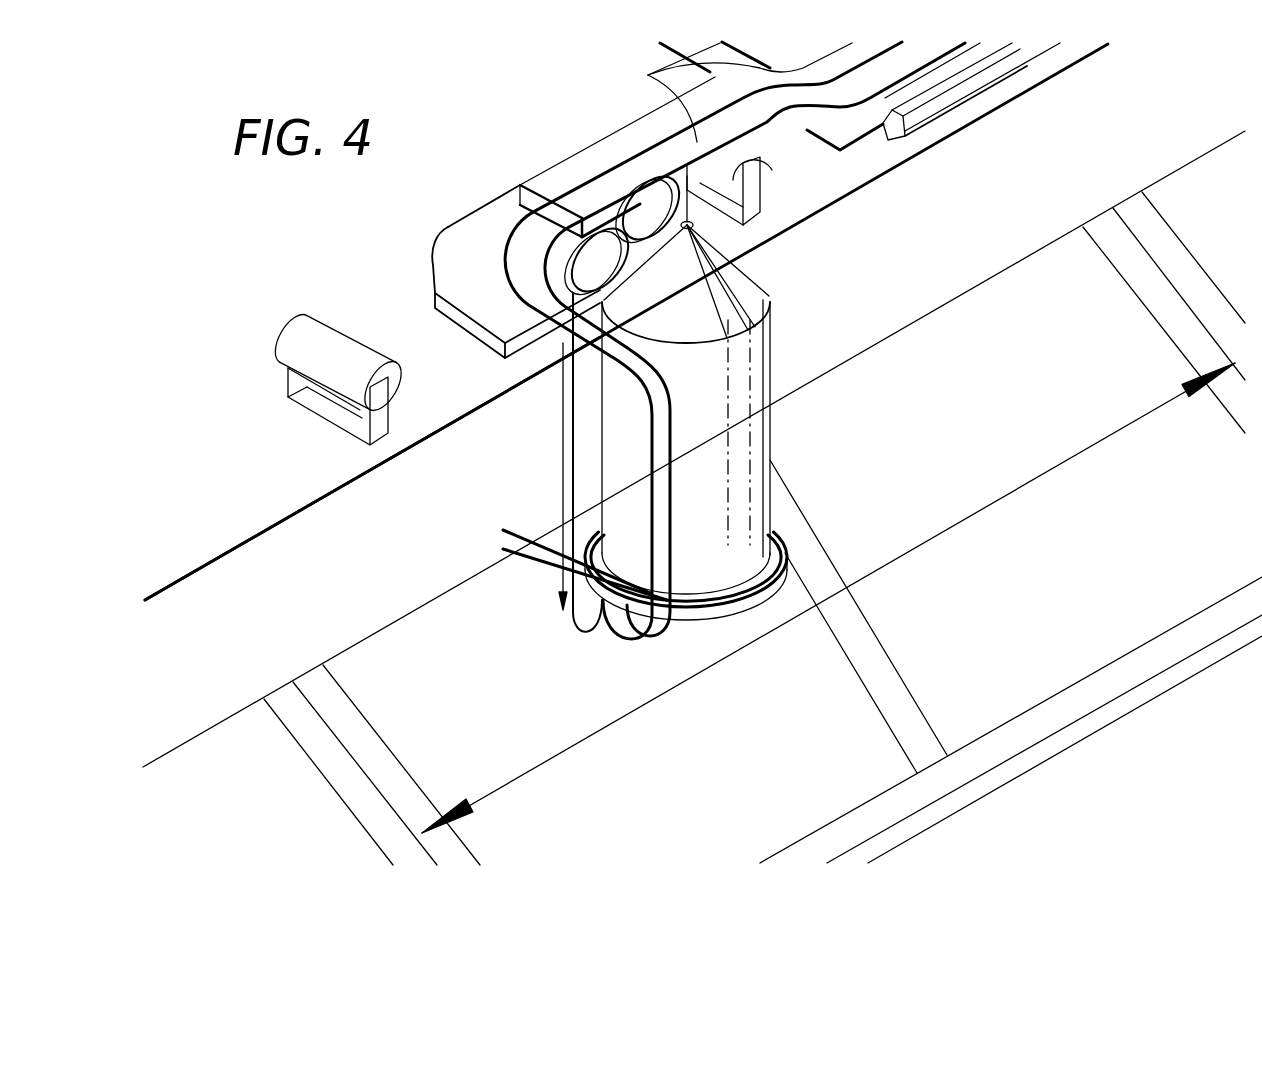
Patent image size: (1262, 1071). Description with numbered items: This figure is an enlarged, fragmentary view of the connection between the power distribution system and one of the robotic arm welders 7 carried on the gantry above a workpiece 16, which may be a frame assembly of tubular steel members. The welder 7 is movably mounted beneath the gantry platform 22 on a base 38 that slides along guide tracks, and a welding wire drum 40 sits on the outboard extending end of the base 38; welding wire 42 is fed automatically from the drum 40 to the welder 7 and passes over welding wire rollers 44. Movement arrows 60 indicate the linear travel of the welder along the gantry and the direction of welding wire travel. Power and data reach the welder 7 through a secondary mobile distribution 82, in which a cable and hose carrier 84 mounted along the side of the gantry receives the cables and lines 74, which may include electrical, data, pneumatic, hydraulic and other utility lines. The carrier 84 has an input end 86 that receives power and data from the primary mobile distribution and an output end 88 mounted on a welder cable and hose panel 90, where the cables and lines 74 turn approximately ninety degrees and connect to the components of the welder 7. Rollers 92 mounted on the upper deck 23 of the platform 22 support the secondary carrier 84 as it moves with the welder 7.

The robotic arm welder 7 is at (772, 676).
The workpiece 16 is at (937, 688).
The platform 22 is at (512, 113).
The upper deck 23 is at (469, 166).
The welder base 38 is at (775, 540).
The welding wire drum 40 is at (769, 327).
The welding wire 42 is at (585, 634).
The welding wire rollers 44 is at (672, 211).
The movement arrows 60 is at (540, 765).
The cables and lines 74 is at (658, 662).
The secondary mobile distribution 82 is at (1014, 100).
The cable and hose carrier 84 is at (615, 130).
The input end 86 is at (892, 136).
The output end 88 is at (518, 207).
The welder cable and hose panel 90 is at (492, 296).
The rollers 92 is at (278, 350).